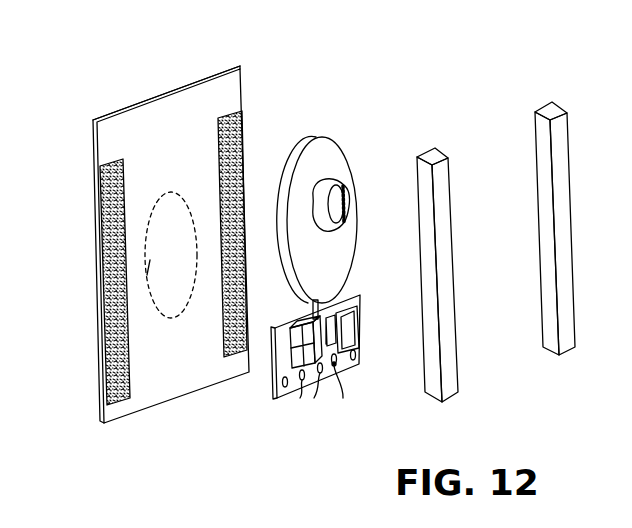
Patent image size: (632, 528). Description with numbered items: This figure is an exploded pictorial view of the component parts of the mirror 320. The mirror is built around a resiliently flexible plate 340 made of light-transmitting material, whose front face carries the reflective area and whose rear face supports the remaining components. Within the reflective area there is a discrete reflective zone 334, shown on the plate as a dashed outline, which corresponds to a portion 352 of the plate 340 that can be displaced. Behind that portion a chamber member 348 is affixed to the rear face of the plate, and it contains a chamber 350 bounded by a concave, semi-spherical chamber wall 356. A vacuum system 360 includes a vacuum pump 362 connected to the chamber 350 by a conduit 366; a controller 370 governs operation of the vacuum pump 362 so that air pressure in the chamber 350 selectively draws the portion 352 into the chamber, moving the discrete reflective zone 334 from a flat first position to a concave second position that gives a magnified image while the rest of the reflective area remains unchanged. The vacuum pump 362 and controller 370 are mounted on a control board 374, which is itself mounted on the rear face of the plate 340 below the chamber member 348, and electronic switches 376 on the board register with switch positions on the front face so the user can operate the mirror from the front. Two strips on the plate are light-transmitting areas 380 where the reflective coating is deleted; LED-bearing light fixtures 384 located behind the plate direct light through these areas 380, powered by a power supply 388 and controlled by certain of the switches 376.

The mirror 320 is at (92, 117).
The plate 340 is at (189, 98).
The light-transmitting areas 380 is at (108, 210).
The portion of the plate 352 is at (147, 275).
The discrete reflective zone 334 is at (168, 278).
The chamber member 348 is at (322, 151).
The chamber 350 is at (339, 188).
The chamber wall 356 is at (346, 218).
The conduit 366 is at (330, 300).
The control board 374 is at (273, 397).
The power supply 388 is at (298, 334).
The vacuum system 360 is at (343, 327).
The controller 370 is at (352, 340).
The electronic switches 376 is at (304, 404).
The vacuum pump 362 is at (331, 348).
The light fixtures 384 is at (442, 205).